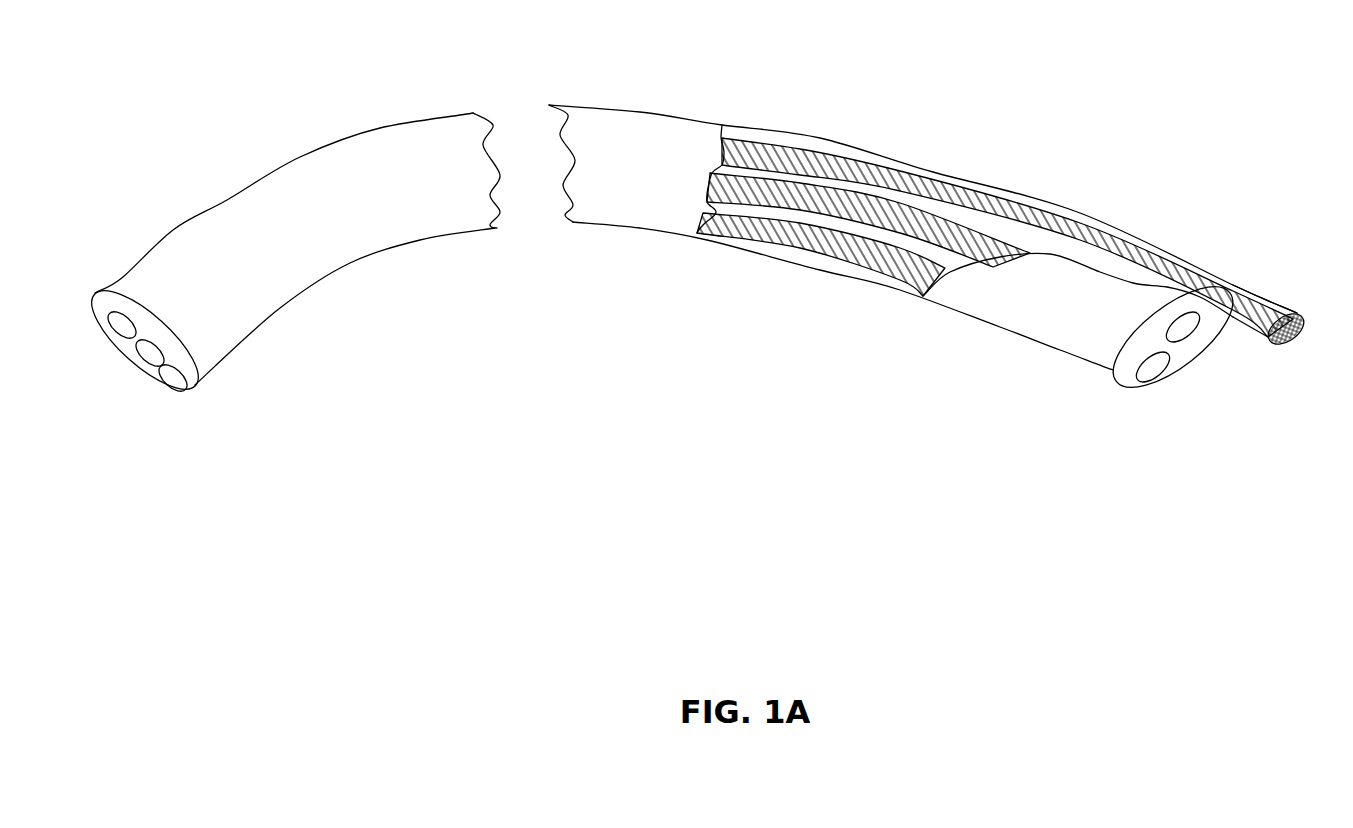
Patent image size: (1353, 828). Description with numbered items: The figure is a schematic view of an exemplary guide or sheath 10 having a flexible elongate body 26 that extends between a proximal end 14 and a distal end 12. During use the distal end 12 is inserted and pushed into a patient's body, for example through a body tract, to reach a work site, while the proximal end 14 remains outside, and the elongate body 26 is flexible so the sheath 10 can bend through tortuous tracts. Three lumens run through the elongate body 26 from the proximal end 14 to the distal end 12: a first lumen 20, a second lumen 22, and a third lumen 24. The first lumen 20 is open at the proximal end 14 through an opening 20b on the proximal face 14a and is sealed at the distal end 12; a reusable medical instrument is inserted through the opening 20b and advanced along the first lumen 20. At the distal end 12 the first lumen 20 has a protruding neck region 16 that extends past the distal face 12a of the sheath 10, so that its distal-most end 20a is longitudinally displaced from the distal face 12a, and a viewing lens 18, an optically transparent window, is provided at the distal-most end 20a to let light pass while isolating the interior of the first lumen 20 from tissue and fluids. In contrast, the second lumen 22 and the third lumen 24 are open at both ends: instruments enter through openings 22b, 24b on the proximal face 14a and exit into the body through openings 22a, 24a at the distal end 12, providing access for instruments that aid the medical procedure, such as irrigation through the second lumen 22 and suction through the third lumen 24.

The sheath 10 is at (525, 288).
The distal end 12 is at (1240, 474).
The distal face 12a is at (1158, 379).
The proximal end 14 is at (196, 418).
The proximal face 14a is at (145, 286).
The protruding neck region 16 is at (1253, 256).
The viewing lens 18 is at (1276, 358).
The first lumen 20 is at (1007, 205).
The distal-most end of the first lumen 20a is at (1303, 359).
The opening 20b is at (99, 352).
The second lumen 22 is at (853, 260).
The opening 22a is at (1194, 375).
The opening 22b is at (105, 394).
The third lumen 24 is at (821, 298).
The opening 24a is at (1154, 405).
The opening 24b is at (148, 417).
The elongate body 26 is at (651, 123).